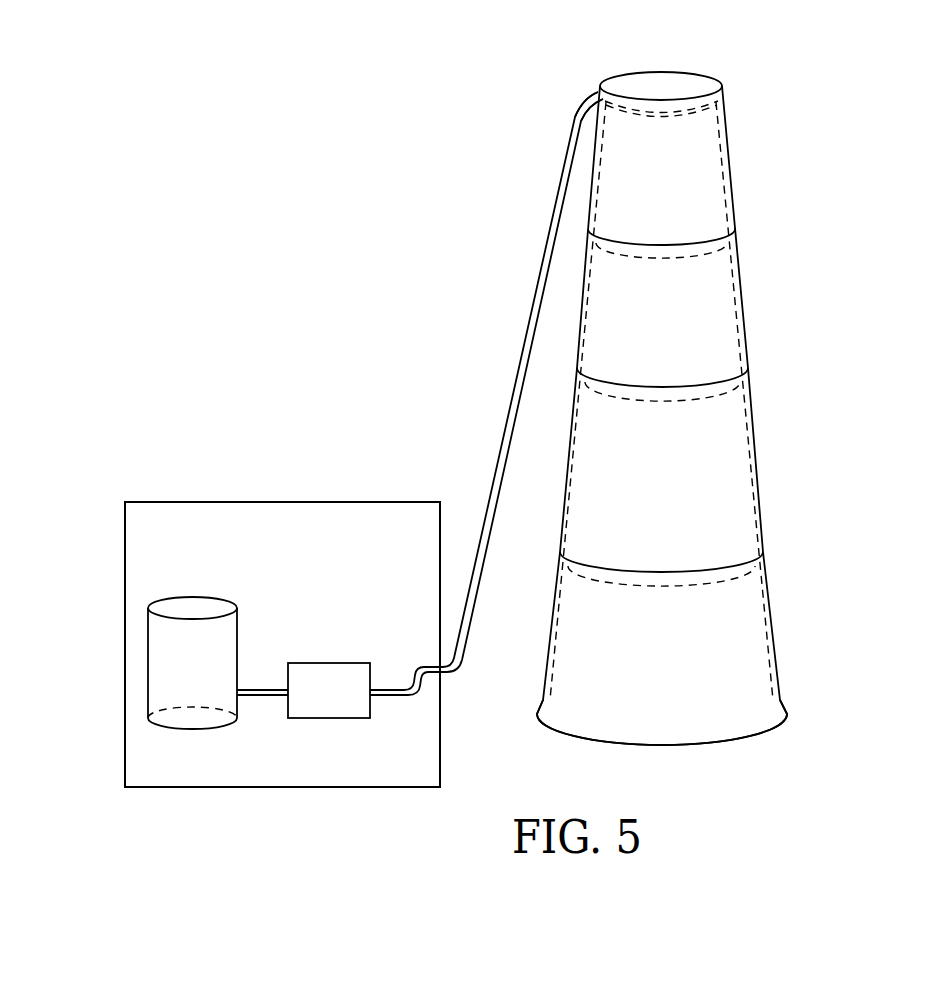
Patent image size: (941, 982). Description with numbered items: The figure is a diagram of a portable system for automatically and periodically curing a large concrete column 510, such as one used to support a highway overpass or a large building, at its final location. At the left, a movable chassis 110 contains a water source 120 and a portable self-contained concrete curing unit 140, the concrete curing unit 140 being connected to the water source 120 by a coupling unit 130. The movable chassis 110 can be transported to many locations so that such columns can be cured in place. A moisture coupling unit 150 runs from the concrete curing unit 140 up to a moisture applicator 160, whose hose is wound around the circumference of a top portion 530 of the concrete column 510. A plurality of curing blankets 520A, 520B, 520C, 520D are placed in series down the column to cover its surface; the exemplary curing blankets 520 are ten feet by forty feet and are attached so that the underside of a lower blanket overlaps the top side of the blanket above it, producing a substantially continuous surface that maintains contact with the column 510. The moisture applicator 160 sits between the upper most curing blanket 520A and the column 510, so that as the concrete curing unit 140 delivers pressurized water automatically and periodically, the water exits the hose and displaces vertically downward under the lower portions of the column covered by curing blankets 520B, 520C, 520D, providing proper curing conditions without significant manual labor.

The movable chassis 110 is at (277, 502).
The water source 120 is at (212, 598).
The coupling unit 130 is at (262, 700).
The portable self-contained concrete curing unit 140 is at (330, 663).
The moisture coupling unit 150 is at (520, 357).
The moisture applicator 160 is at (630, 95).
The concrete column 510 is at (662, 82).
The curing blankets 520 is at (622, 508).
The upper most curing blanket 520A is at (692, 172).
The curing blanket 520B is at (700, 298).
The curing blanket 520C is at (717, 447).
The curing blanket 520D is at (728, 630).
The top portion 530 is at (722, 84).